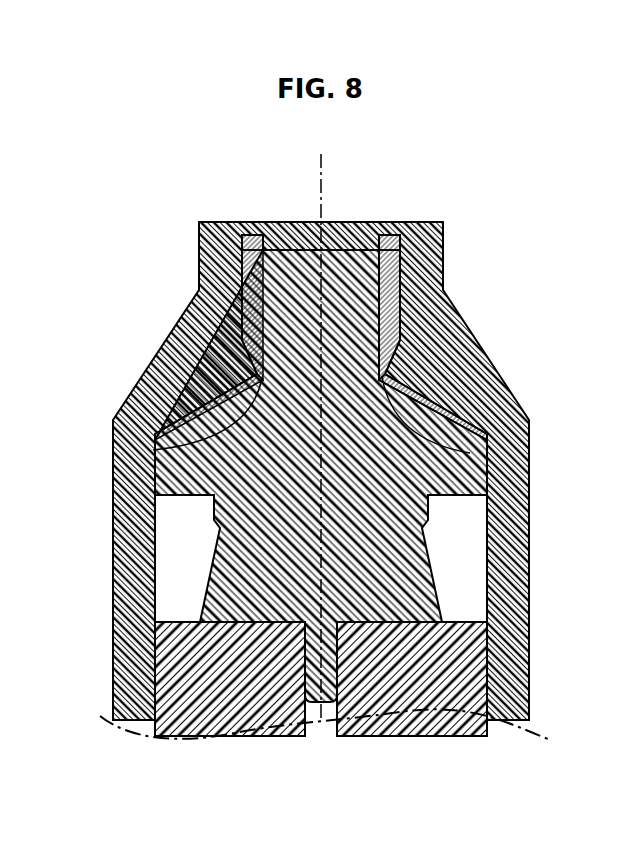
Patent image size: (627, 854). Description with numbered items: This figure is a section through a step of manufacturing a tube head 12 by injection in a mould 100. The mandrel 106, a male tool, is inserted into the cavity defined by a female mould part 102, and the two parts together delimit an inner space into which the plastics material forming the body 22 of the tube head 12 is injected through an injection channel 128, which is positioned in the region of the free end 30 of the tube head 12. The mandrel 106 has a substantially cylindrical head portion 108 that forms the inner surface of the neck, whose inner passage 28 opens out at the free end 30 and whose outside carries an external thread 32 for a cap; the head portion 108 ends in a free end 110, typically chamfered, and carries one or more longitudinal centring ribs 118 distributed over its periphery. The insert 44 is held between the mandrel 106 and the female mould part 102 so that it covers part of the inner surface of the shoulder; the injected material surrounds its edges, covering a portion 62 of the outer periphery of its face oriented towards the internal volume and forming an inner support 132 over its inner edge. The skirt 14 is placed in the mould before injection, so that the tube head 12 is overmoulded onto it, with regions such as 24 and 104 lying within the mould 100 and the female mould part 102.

The mould 100 is at (542, 394).
The tube head 12 is at (426, 322).
The skirt 14 is at (495, 561).
The body 22 is at (243, 377).
The conical seal 24 is at (205, 405).
The inner passage 28 is at (318, 248).
The free end 30 is at (256, 236).
The external thread 32 is at (408, 283).
The insert 44 is at (492, 470).
The portion of the outer periphery of the face of the insert 62 is at (470, 453).
The female mould part 102 is at (528, 528).
The cavity 104 is at (203, 553).
The mandrel 106 is at (251, 283).
The head portion 108 is at (260, 244).
The free end 110 is at (336, 249).
The centring ribs 118 is at (242, 328).
The injection channel 128 is at (385, 236).
The inner support 132 is at (153, 450).